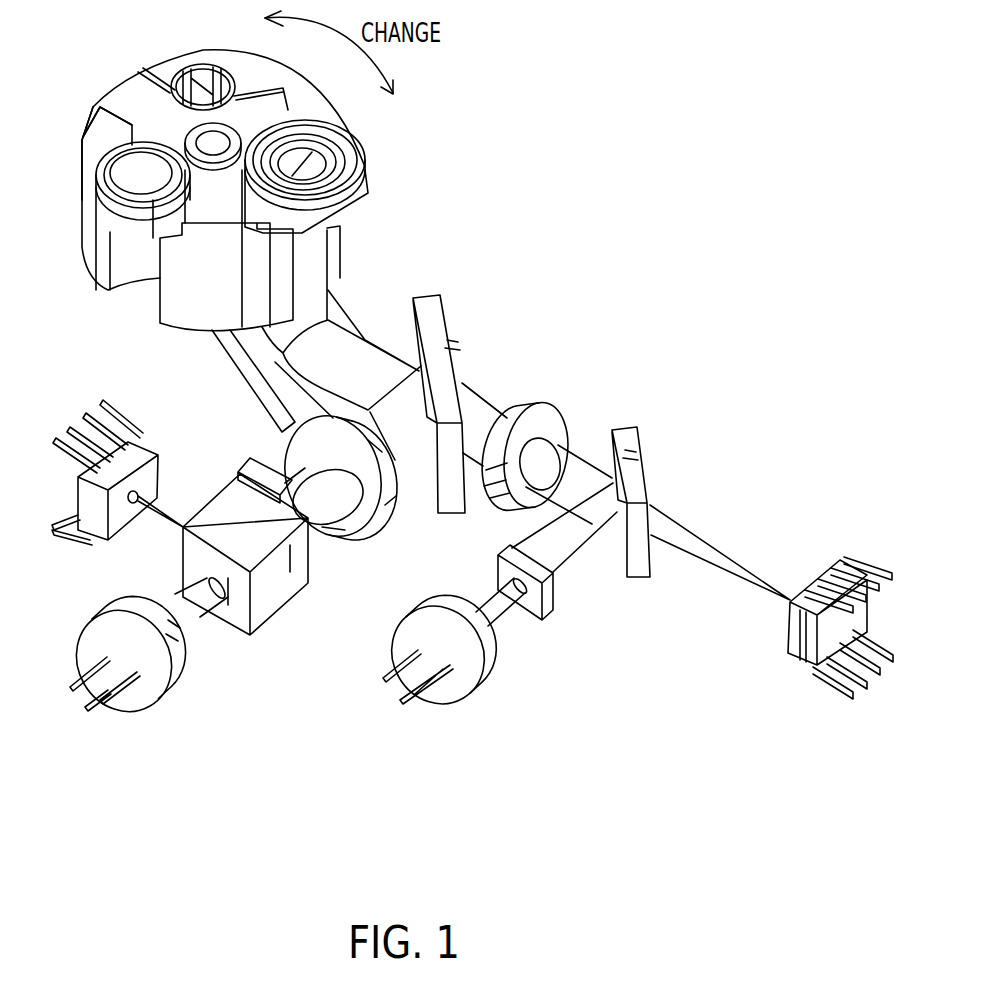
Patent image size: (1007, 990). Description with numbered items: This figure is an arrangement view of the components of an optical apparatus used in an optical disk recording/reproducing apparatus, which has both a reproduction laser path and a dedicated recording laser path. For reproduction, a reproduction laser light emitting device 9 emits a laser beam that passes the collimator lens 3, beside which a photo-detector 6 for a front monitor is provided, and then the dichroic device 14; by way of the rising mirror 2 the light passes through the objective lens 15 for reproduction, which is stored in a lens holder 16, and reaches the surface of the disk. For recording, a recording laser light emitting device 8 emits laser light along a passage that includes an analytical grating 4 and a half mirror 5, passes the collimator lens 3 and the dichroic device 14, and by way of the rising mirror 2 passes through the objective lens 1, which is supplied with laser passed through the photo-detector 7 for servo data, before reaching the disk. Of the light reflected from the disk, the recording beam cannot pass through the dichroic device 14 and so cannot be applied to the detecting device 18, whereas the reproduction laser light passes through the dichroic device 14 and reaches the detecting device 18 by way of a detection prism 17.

The objective lens 1 is at (367, 190).
The rising mirror 2 is at (232, 368).
The collimator lens 3 is at (548, 405).
The analytical grating 4 is at (542, 616).
The half mirror 5 is at (652, 481).
The photo-detector for a front monitor 6 is at (243, 459).
The photo-detector for servo data 7 is at (820, 582).
The recording laser light emitting device 8 is at (485, 692).
The reproduction laser light emitting device 9 is at (163, 700).
The dichroic device 14 is at (455, 356).
The objective lens for reproduction 15 is at (168, 145).
The lens holder 16 is at (112, 127).
The detection prism 17 is at (287, 615).
The detecting device 18 is at (76, 492).